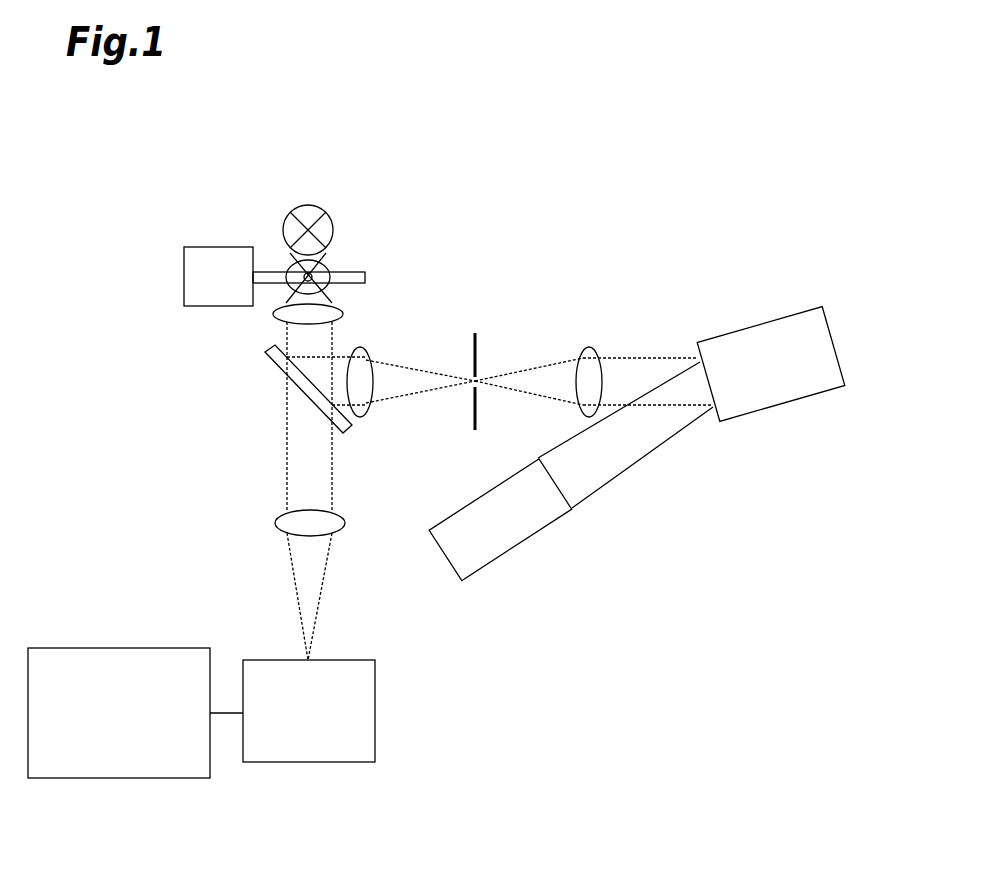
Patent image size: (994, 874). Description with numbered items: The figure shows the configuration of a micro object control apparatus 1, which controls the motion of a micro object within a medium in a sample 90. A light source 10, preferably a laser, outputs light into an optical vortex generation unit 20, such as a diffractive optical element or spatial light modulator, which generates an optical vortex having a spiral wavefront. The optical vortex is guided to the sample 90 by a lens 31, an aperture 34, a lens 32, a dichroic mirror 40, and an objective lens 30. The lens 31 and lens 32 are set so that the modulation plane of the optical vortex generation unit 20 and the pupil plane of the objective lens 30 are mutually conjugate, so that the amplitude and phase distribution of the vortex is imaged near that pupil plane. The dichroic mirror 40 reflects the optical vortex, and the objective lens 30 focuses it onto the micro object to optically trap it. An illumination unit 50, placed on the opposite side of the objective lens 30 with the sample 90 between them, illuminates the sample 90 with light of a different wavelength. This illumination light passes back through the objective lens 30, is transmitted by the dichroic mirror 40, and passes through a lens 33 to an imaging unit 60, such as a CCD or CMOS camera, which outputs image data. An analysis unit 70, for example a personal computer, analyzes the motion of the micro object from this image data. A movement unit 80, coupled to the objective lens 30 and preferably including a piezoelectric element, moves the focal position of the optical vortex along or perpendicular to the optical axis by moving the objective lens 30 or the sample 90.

The micro object control apparatus 1 is at (553, 183).
The light source 10 is at (523, 543).
The optical vortex generation unit 20 is at (787, 403).
The objective lens 30 is at (276, 308).
The lens 31 is at (590, 348).
The lens 32 is at (367, 351).
The lens 33 is at (275, 523).
The aperture 34 is at (480, 347).
The dichroic mirror 40 is at (270, 357).
The illumination unit 50 is at (333, 228).
The imaging unit 60 is at (307, 763).
The analysis unit 70 is at (117, 780).
The movement unit 80 is at (183, 275).
The sample 90 is at (365, 277).